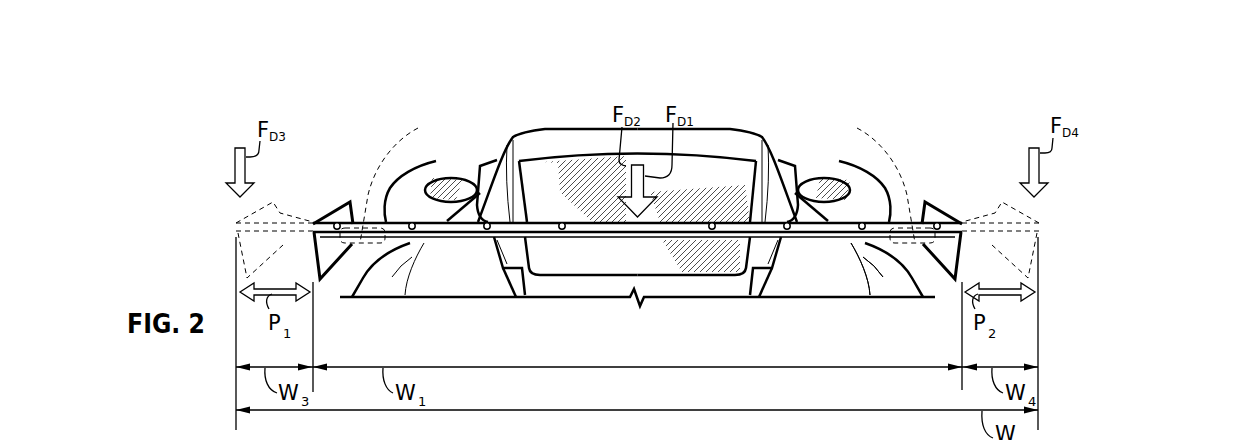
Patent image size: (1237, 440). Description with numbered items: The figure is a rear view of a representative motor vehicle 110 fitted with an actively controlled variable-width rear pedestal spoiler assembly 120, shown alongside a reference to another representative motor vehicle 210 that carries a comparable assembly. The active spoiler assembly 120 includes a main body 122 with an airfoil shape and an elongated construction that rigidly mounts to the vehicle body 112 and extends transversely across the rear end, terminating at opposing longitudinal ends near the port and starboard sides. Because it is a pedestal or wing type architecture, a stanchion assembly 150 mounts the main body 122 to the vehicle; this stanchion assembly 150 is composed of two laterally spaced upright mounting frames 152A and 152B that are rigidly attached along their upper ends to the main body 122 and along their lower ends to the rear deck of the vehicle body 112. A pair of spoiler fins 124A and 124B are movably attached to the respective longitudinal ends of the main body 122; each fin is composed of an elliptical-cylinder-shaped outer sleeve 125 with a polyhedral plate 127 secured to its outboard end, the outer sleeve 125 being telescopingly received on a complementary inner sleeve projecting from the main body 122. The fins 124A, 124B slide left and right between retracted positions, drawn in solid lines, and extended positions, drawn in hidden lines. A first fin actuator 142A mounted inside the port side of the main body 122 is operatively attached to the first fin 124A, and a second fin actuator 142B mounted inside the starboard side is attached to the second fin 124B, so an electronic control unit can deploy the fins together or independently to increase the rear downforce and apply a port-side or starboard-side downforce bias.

The motor vehicle 110 is at (1107, 99).
The vehicle body 112 is at (760, 136).
The active spoiler assembly 120 is at (721, 158).
The main body 122 is at (588, 218).
The first spoiler fin 124A is at (348, 194).
The second spoiler fin 124B is at (927, 194).
The outer sleeve 125 is at (436, 161).
The polyhedral plate 127 is at (314, 221).
The first fin actuator 142A is at (345, 192).
The second fin actuator 142B is at (930, 192).
The stanchion assembly 150 is at (802, 267).
The first upright mounting frame 152A is at (500, 288).
The second upright mounting frame 152B is at (775, 288).
The motor vehicle 210 is at (1128, 439).